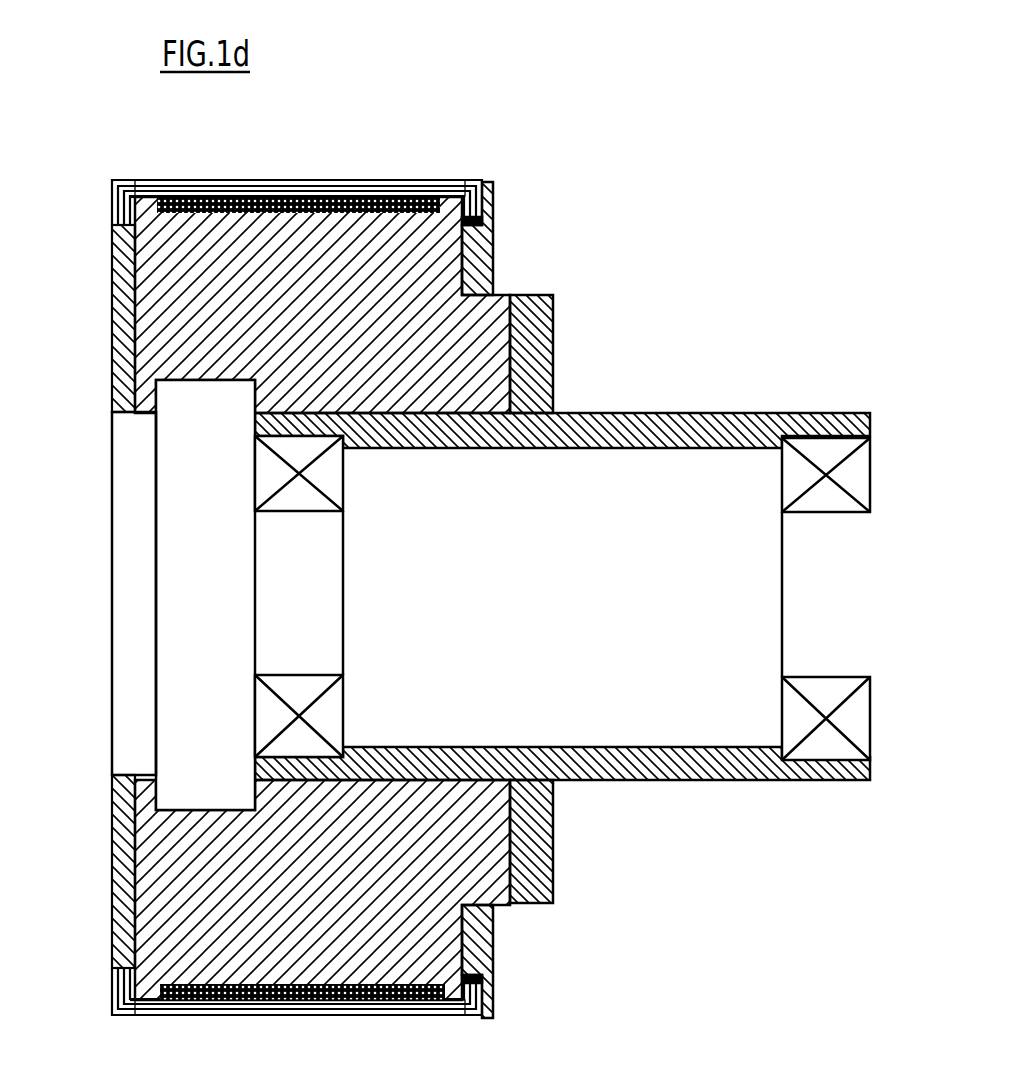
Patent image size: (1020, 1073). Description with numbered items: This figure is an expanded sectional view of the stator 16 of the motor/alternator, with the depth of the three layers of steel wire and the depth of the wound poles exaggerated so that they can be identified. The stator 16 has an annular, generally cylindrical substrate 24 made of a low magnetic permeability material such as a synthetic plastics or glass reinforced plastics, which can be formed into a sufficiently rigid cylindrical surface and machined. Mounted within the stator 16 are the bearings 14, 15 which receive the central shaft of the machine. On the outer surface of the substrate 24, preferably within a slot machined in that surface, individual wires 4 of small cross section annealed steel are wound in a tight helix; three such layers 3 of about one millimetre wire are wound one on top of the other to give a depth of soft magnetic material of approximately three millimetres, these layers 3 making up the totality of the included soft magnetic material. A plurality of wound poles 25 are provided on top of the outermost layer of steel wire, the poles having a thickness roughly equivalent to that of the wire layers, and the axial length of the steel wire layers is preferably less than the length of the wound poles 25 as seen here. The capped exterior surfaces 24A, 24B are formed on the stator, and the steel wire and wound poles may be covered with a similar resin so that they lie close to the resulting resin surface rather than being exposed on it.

The helical windings or layers of steel wire 3 is at (243, 181).
The individual wires 4 is at (352, 181).
The bearing 14 is at (345, 475).
The bearing 15 is at (782, 484).
The stator 16 is at (100, 177).
The substrate 24 is at (425, 335).
The capped exterior surface 24A is at (150, 392).
The capped exterior surface 24B is at (495, 227).
The wound poles 25 is at (475, 180).